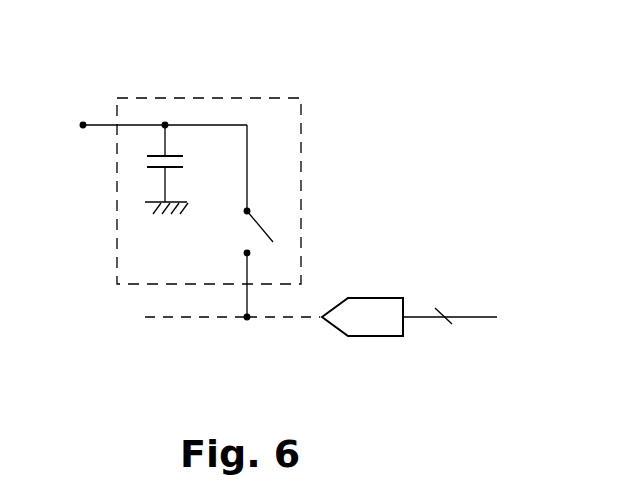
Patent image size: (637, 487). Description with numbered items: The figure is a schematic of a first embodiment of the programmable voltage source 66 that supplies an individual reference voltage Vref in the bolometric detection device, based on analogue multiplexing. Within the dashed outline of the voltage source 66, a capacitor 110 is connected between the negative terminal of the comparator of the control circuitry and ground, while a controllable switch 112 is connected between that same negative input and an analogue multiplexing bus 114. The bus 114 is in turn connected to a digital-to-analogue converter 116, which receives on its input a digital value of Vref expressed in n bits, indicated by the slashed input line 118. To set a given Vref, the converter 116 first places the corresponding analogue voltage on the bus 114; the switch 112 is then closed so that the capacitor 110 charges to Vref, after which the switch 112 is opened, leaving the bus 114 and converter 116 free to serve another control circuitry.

The programmable voltage source 66 is at (158, 97).
The capacitor 110 is at (150, 156).
The controllable switch 112 is at (259, 227).
The analogue multiplexing bus 114 is at (260, 319).
The digital-to-analogue converter 116 is at (373, 336).
The n-bit digital input 118 is at (470, 320).